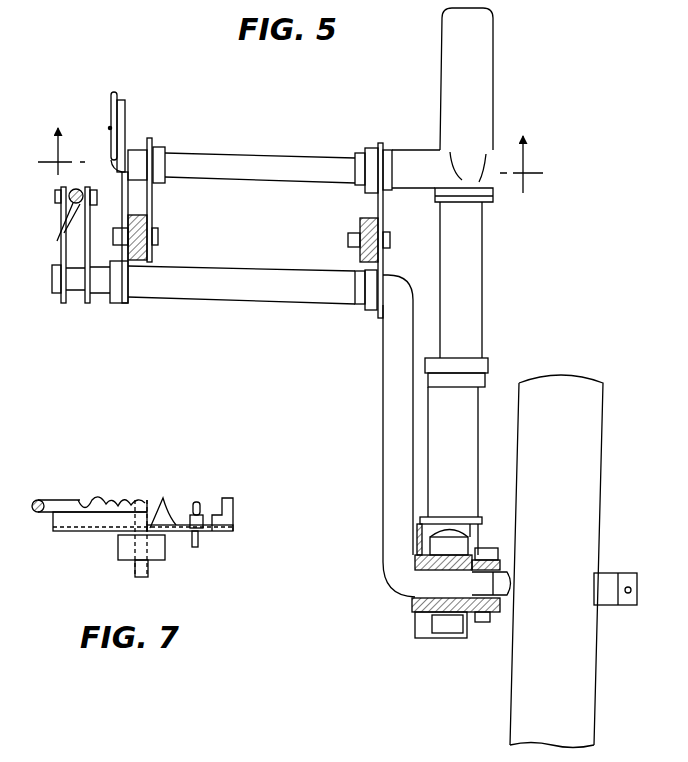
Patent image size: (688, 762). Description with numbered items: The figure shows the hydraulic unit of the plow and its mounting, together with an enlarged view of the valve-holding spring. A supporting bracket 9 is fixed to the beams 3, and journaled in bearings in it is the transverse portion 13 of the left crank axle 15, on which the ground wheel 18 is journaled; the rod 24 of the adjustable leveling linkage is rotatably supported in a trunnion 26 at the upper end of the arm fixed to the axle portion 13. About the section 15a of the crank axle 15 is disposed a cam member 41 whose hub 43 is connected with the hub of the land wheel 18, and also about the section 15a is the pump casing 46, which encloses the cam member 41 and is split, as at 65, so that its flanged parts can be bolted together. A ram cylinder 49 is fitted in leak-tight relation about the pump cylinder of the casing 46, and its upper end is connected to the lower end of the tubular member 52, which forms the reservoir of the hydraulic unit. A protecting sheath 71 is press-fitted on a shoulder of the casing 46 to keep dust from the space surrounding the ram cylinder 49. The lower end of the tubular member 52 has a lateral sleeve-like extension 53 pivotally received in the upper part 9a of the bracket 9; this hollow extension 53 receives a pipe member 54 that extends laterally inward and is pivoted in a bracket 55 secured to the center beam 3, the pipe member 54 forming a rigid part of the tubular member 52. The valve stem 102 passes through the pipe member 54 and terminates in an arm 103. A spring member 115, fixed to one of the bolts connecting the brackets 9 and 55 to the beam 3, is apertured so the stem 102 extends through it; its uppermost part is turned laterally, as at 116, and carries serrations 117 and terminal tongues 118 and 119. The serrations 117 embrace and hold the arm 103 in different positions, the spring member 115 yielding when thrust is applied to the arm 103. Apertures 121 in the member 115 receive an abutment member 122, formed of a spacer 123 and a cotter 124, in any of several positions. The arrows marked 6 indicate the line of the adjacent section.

In FIG. 5, the beam 3 is at (150, 228).
In FIG. 5, the section line 6 is at (290, 156).
In FIG. 5, the supporting bracket 9 is at (379, 261).
In FIG. 5, the upper part of bracket 9a is at (380, 143).
In FIG. 5, the transverse portion of crank axle 13 is at (238, 297).
In FIG. 5, the crank axle 15 is at (378, 464).
In FIG. 5, the crank axle section 15a is at (479, 585).
In FIG. 5, the ground wheel 18 is at (56, 228).
In FIG. 5, the rod 24 is at (57, 243).
In FIG. 5, the trunnion 26 is at (63, 189).
In FIG. 5, the cam member 41 is at (450, 545).
In FIG. 5, the hub 43 is at (472, 562).
In FIG. 5, the pump casing 46 is at (484, 474).
In FIG. 5, the ram cylinder 49 is at (467, 347).
In FIG. 5, the tubular member 52 is at (478, 112).
In FIG. 5, the sleeve-like extension 53 is at (406, 163).
In FIG. 5, the pipe member 54 is at (218, 156).
In FIG. 7, the pipe member 54 is at (167, 553).
In FIG. 5, the bracket 55 is at (149, 148).
In FIG. 5, the split 65 is at (420, 637).
In FIG. 5, the protecting sheath 71 is at (470, 448).
In FIG. 7, the stem 102 is at (146, 573).
In FIG. 5, the arm 103 is at (110, 112).
In FIG. 7, the arm 103 is at (75, 505).
In FIG. 5, the spring member 115 is at (122, 196).
In FIG. 7, the spring member 115 is at (98, 535).
In FIG. 5, the laterally turned part 116 is at (122, 103).
In FIG. 7, the laterally turned part 116 is at (78, 523).
In FIG. 7, the serrations 117 is at (113, 503).
In FIG. 5, the terminal tongue 118 is at (108, 129).
In FIG. 7, the terminal tongue 118 is at (58, 500).
In FIG. 7, the terminal tongue 119 is at (233, 502).
In FIG. 7, the apertures 121 is at (165, 510).
In FIG. 7, the abutment member 122 is at (206, 513).
In FIG. 7, the spacer 123 is at (188, 515).
In FIG. 7, the cotter 124 is at (197, 502).